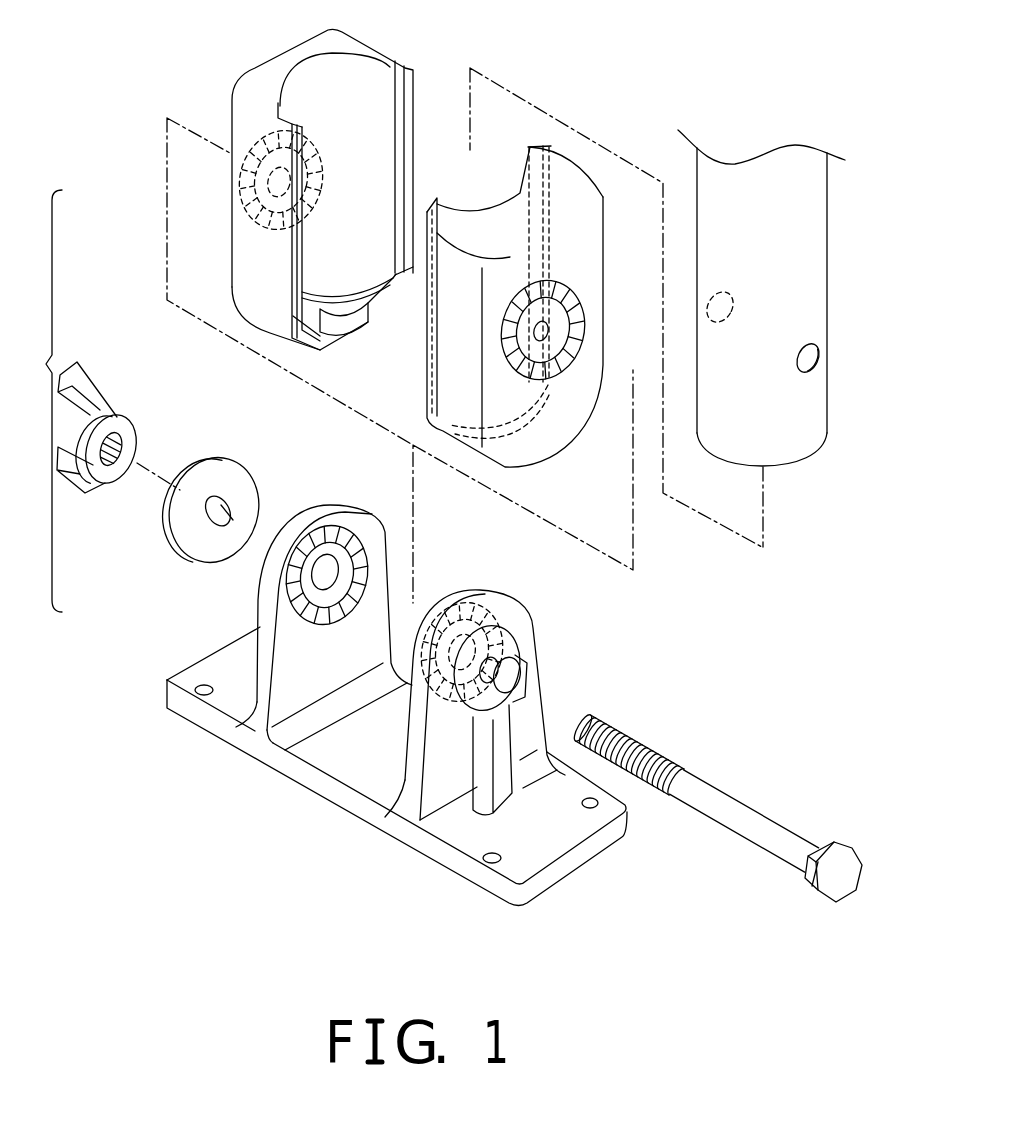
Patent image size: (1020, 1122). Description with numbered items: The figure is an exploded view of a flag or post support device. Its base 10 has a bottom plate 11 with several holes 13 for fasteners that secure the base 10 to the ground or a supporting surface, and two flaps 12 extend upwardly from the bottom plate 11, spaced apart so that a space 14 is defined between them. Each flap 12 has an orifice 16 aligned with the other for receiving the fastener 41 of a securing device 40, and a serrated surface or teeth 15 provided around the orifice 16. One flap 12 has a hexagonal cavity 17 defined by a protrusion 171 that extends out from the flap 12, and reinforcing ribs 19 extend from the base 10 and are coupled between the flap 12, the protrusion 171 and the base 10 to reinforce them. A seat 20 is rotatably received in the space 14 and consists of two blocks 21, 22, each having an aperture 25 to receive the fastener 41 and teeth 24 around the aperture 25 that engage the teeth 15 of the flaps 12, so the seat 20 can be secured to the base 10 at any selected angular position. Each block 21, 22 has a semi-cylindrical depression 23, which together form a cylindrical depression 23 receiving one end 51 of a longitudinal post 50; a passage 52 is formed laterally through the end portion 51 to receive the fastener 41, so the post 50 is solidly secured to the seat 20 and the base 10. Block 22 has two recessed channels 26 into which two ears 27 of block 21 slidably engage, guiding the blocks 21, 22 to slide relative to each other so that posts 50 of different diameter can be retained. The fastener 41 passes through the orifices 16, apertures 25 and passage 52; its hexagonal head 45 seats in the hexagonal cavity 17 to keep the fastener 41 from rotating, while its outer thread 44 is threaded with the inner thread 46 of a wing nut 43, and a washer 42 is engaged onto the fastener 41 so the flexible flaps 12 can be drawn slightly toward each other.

The base 10 is at (247, 837).
The bottom plate 11 is at (323, 788).
The flaps 12 is at (259, 702).
The holes 13 is at (198, 688).
The space 14 is at (302, 688).
The teeth 15 is at (307, 543).
The orifice 16 is at (340, 560).
The hexagonal cavity 17 is at (513, 678).
The protrusion 171 is at (527, 617).
The reinforcing ribs 19 is at (488, 772).
The seat 20 is at (498, 75).
The block 21 is at (260, 68).
The block 22 is at (525, 246).
The depression 23 is at (353, 72).
The teeth 24 is at (262, 178).
The aperture 25 is at (283, 182).
The recessed channels 26 is at (541, 147).
The ears 27 is at (413, 97).
The securing device 40 is at (633, 662).
The fastener 41 is at (732, 807).
The washer 42 is at (216, 468).
The wing nut 43 is at (98, 395).
The outer thread 44 is at (625, 740).
The hexagonal head 45 is at (842, 848).
The inner thread 46 is at (120, 450).
The post 50 is at (765, 167).
The end 51 is at (783, 453).
The passage 52 is at (708, 300).